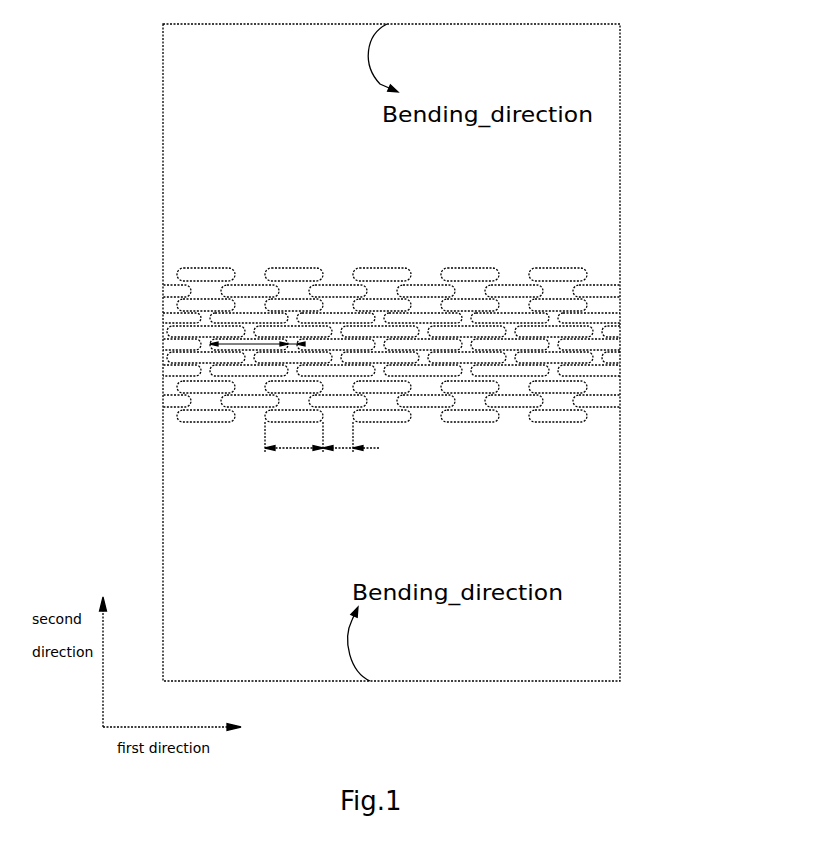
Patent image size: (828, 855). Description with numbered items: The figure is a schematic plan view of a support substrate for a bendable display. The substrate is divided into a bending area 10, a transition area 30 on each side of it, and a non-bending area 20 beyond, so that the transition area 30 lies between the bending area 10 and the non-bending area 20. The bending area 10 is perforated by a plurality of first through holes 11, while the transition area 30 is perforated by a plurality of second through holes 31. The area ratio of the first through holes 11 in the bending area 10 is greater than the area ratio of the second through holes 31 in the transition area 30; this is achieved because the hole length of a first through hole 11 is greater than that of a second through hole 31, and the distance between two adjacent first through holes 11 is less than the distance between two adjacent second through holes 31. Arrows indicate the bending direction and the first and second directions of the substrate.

The non-bending area 20 is at (588, 190).
The bending area 10 is at (401, 289).
The transition area 30 is at (406, 343).
The first through hole 11 is at (248, 317).
The second through hole 31 is at (374, 280).